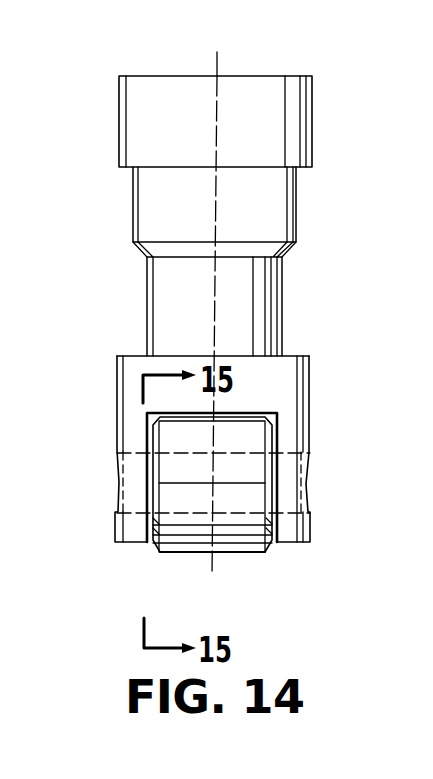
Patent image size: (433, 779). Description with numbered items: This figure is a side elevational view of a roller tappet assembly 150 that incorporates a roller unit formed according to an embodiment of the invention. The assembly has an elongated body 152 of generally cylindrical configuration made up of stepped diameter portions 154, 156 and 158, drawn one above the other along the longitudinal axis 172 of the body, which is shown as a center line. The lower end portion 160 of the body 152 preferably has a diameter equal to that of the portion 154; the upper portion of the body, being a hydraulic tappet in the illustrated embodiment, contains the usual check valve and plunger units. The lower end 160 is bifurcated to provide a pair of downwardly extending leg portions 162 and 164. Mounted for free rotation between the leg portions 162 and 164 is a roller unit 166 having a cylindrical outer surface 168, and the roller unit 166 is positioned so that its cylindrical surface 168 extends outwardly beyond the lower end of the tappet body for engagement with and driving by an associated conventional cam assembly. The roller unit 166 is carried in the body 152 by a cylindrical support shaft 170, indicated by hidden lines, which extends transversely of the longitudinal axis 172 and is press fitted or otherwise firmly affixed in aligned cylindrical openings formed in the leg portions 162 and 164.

The roller tappet assembly 150 is at (90, 178).
The elongated body 152 is at (324, 119).
The stepped diameter portion 154 is at (313, 149).
The stepped diameter portion 156 is at (296, 213).
The stepped diameter portion 158 is at (282, 310).
The lower end portion 160 is at (310, 377).
The leg portion 162 is at (120, 541).
The leg portion 164 is at (293, 545).
The roller unit 166 is at (248, 559).
The cylindrical outer surface 168 is at (181, 553).
The support shaft 170 is at (120, 471).
The longitudinal axis 172 is at (218, 58).